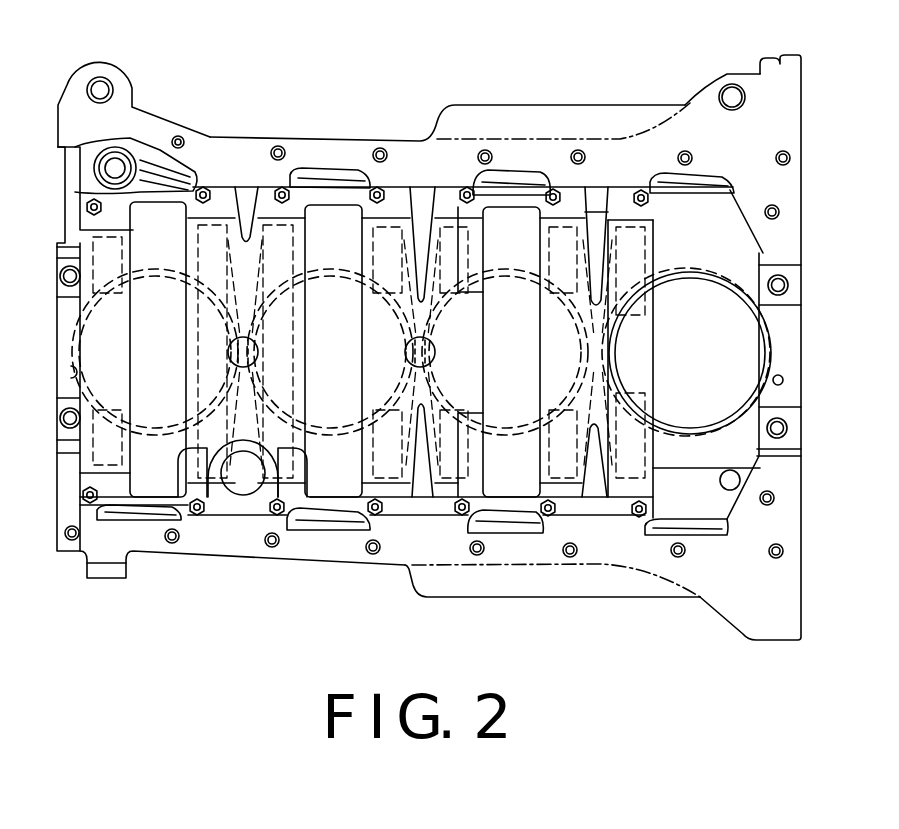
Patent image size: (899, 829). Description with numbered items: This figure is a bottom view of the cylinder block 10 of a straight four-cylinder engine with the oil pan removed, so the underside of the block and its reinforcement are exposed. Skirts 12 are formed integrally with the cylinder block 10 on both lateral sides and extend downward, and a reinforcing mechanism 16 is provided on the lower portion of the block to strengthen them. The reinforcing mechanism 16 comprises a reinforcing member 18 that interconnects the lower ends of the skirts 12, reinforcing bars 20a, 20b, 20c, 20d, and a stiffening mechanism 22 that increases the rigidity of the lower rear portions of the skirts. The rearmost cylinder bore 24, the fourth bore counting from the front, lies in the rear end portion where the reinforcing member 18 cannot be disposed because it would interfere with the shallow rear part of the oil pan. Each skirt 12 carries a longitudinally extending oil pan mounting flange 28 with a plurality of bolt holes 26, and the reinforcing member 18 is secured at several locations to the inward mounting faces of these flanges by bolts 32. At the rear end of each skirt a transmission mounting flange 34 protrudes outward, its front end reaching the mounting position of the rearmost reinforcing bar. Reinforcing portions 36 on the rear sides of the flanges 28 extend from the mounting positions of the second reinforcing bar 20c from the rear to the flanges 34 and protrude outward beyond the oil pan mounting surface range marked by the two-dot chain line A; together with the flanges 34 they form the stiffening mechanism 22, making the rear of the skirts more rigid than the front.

The cylinder block 10 is at (247, 562).
The skirts 12 is at (283, 133).
The reinforcing mechanism 16 is at (570, 213).
The reinforcing member 18 is at (310, 512).
The reinforcing bar 20a is at (175, 335).
The reinforcing bar 20b is at (350, 335).
The reinforcing bar 20c is at (440, 337).
The reinforcing bar 20d is at (638, 337).
The stiffening mechanism 22 is at (685, 97).
The rearmost cylinder bore 24 is at (737, 360).
The bolt holes 26 is at (178, 137).
The oil pan mounting flange 28 is at (340, 150).
The bolts 32 is at (205, 190).
The transmission mounting flange 34 is at (785, 105).
The reinforcing portions 36 is at (487, 112).
The two-dot chain line A is at (530, 137).